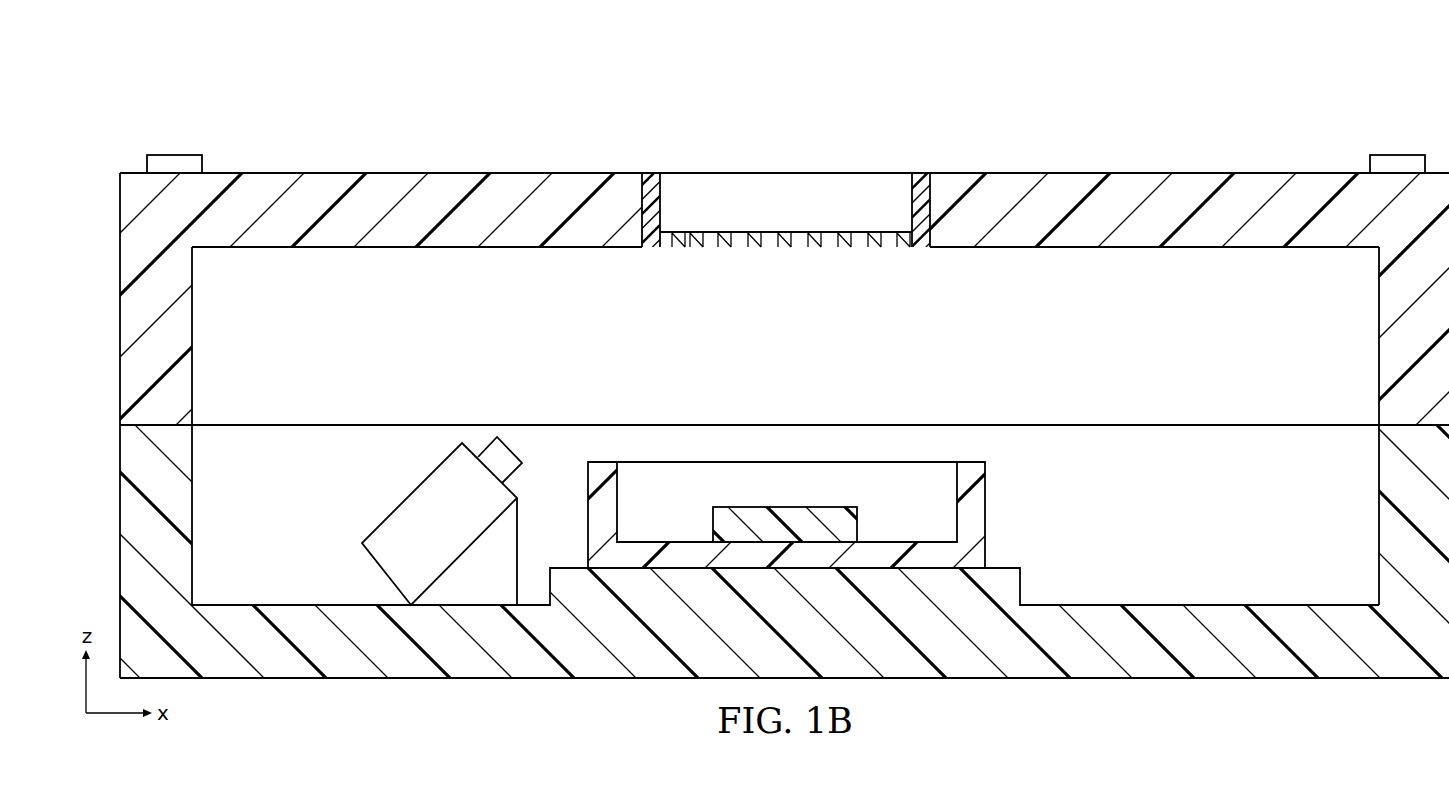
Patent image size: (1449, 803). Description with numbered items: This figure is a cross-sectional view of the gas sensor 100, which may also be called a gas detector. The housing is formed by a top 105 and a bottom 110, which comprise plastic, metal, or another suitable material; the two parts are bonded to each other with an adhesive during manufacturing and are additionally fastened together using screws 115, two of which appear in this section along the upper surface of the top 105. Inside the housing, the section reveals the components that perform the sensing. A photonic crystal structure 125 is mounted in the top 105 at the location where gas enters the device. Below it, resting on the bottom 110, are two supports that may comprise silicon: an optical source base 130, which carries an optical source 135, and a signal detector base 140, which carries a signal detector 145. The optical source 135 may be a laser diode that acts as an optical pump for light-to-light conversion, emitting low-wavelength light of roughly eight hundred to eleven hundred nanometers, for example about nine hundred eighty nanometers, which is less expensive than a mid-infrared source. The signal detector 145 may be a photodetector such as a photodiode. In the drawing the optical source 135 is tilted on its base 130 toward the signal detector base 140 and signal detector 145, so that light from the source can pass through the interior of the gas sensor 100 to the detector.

The gas sensor 100 is at (480, 98).
The top 105 is at (332, 183).
The bottom 110 is at (288, 668).
The screws 115 is at (172, 154).
The photonic crystal structure 125 is at (743, 232).
The optical source base 130 is at (475, 593).
The optical source 135 is at (410, 493).
The signal detector base 140 is at (976, 512).
The signal detector 145 is at (755, 523).